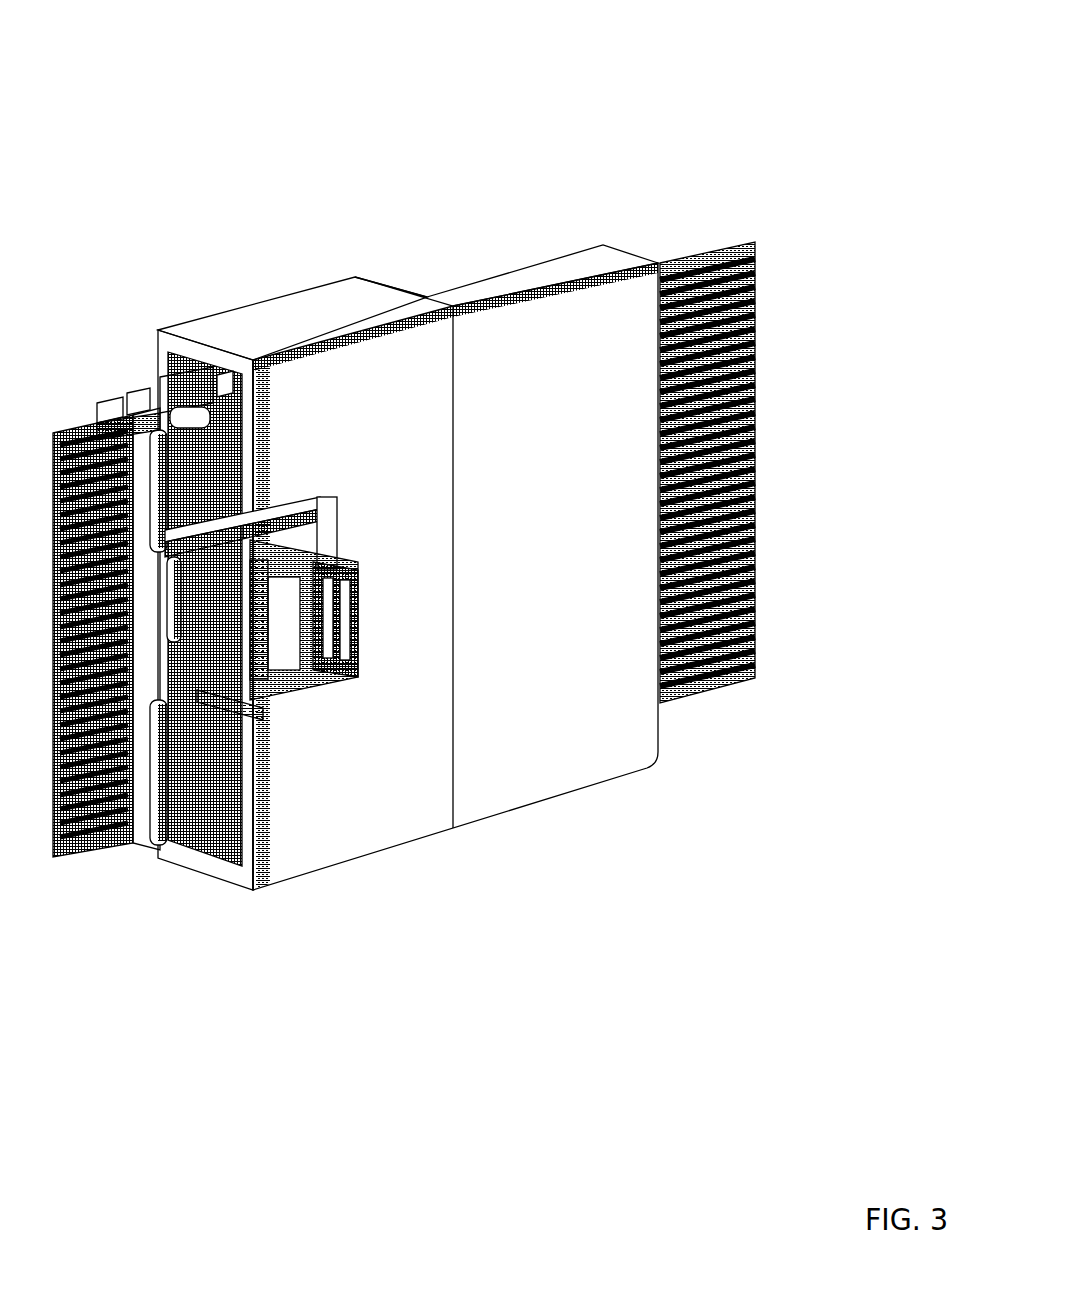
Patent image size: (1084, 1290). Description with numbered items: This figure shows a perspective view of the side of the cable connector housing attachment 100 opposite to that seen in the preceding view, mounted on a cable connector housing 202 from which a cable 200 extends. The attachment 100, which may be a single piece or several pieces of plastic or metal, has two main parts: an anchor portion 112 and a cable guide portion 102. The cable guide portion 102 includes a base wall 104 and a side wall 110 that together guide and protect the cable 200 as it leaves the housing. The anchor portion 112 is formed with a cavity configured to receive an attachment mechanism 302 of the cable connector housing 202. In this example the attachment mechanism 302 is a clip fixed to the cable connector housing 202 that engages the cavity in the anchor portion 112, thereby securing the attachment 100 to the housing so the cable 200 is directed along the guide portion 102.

The cable connector housing attachment 100 is at (505, 451).
The cable guide portion 102 is at (555, 516).
The base wall 104 is at (858, 199).
The side wall 110 is at (735, 860).
The anchor portion 112 is at (352, 261).
The cable 200 is at (870, 775).
The cable connector housing 202 is at (330, 983).
The attachment mechanism 302 is at (643, 1039).